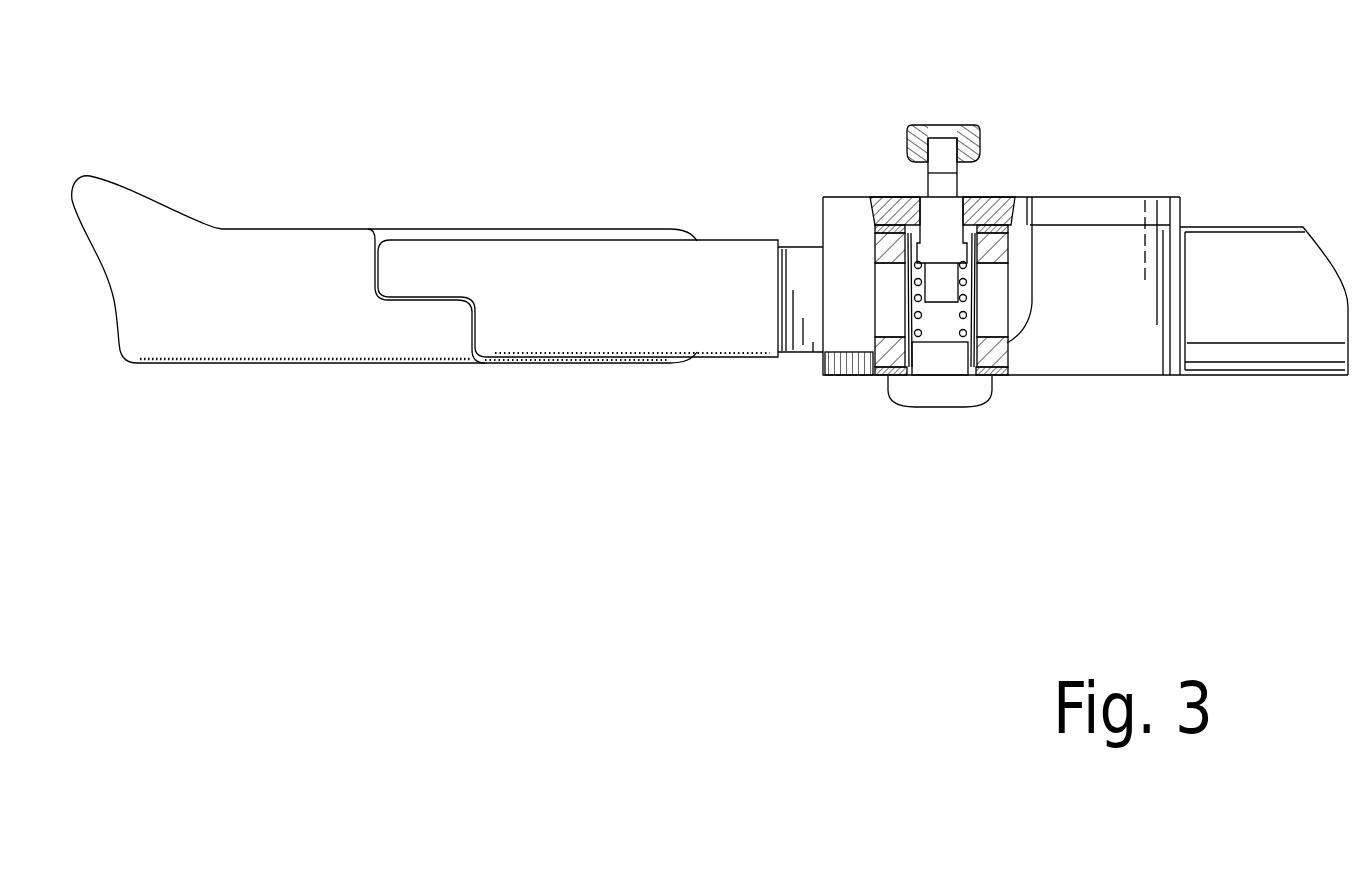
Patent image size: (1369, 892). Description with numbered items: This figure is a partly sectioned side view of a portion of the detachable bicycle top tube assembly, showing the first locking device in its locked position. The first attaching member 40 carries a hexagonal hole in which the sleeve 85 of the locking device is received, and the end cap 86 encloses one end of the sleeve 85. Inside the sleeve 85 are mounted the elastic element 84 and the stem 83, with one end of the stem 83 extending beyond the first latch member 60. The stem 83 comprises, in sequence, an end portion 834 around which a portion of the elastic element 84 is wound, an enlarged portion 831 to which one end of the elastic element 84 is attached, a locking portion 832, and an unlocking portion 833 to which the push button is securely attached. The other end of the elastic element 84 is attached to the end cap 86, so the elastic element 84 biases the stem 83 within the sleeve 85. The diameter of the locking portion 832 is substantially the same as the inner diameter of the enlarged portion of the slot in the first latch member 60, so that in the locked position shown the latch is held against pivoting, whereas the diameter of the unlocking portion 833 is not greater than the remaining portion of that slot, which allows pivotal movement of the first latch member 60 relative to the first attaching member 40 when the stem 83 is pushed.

The first attaching member 40 is at (165, 332).
The first latch member 60 is at (557, 260).
The stem 83 is at (960, 181).
The enlarged portion 831 is at (955, 250).
The locking portion 832 is at (953, 223).
The unlocking portion 833 is at (933, 185).
The end portion 834 is at (945, 283).
The elastic element 84 is at (910, 340).
The sleeve 85 is at (902, 298).
The end cap 86 is at (953, 395).